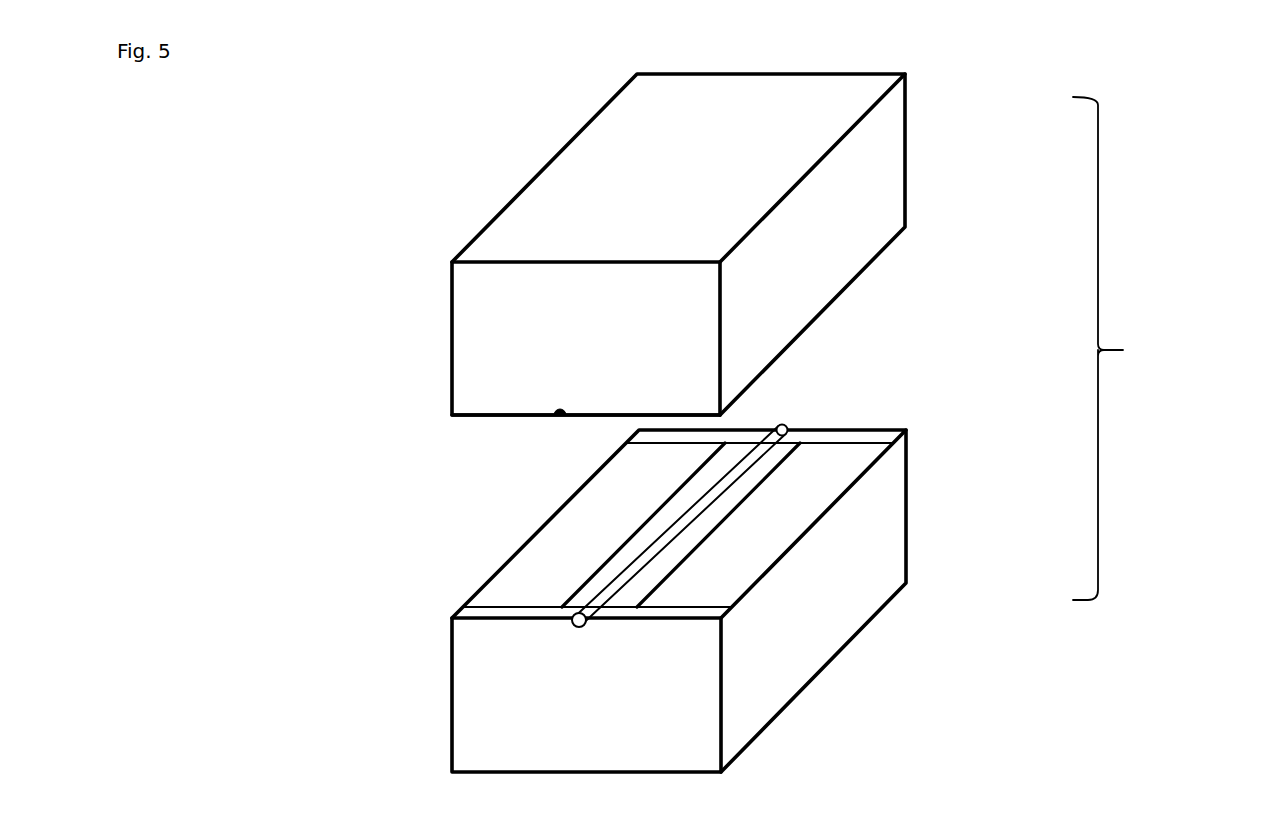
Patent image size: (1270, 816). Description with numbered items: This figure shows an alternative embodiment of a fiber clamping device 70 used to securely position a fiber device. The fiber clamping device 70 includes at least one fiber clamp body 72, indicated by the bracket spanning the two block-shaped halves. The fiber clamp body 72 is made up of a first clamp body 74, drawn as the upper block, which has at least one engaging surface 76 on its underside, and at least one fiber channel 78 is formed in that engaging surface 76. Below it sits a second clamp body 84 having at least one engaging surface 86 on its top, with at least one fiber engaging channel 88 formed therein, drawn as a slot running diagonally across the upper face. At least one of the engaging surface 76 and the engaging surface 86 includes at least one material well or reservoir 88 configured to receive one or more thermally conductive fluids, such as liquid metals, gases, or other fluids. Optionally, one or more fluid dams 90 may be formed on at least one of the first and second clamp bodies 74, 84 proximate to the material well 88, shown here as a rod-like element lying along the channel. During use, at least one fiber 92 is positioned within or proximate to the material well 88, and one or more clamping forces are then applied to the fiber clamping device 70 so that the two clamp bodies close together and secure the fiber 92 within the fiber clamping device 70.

The fiber clamping device 70 is at (1140, 148).
The fiber clamp body 72 is at (1122, 348).
The first clamp body 74 is at (450, 300).
The engaging surface 76 is at (470, 418).
The fiber channel 78 is at (558, 410).
The second clamp body 84 is at (465, 757).
The engaging surface 86 is at (503, 587).
The fiber engaging channel 88 is at (790, 455).
The fluid dam 90 is at (687, 613).
The fiber 92 is at (783, 425).